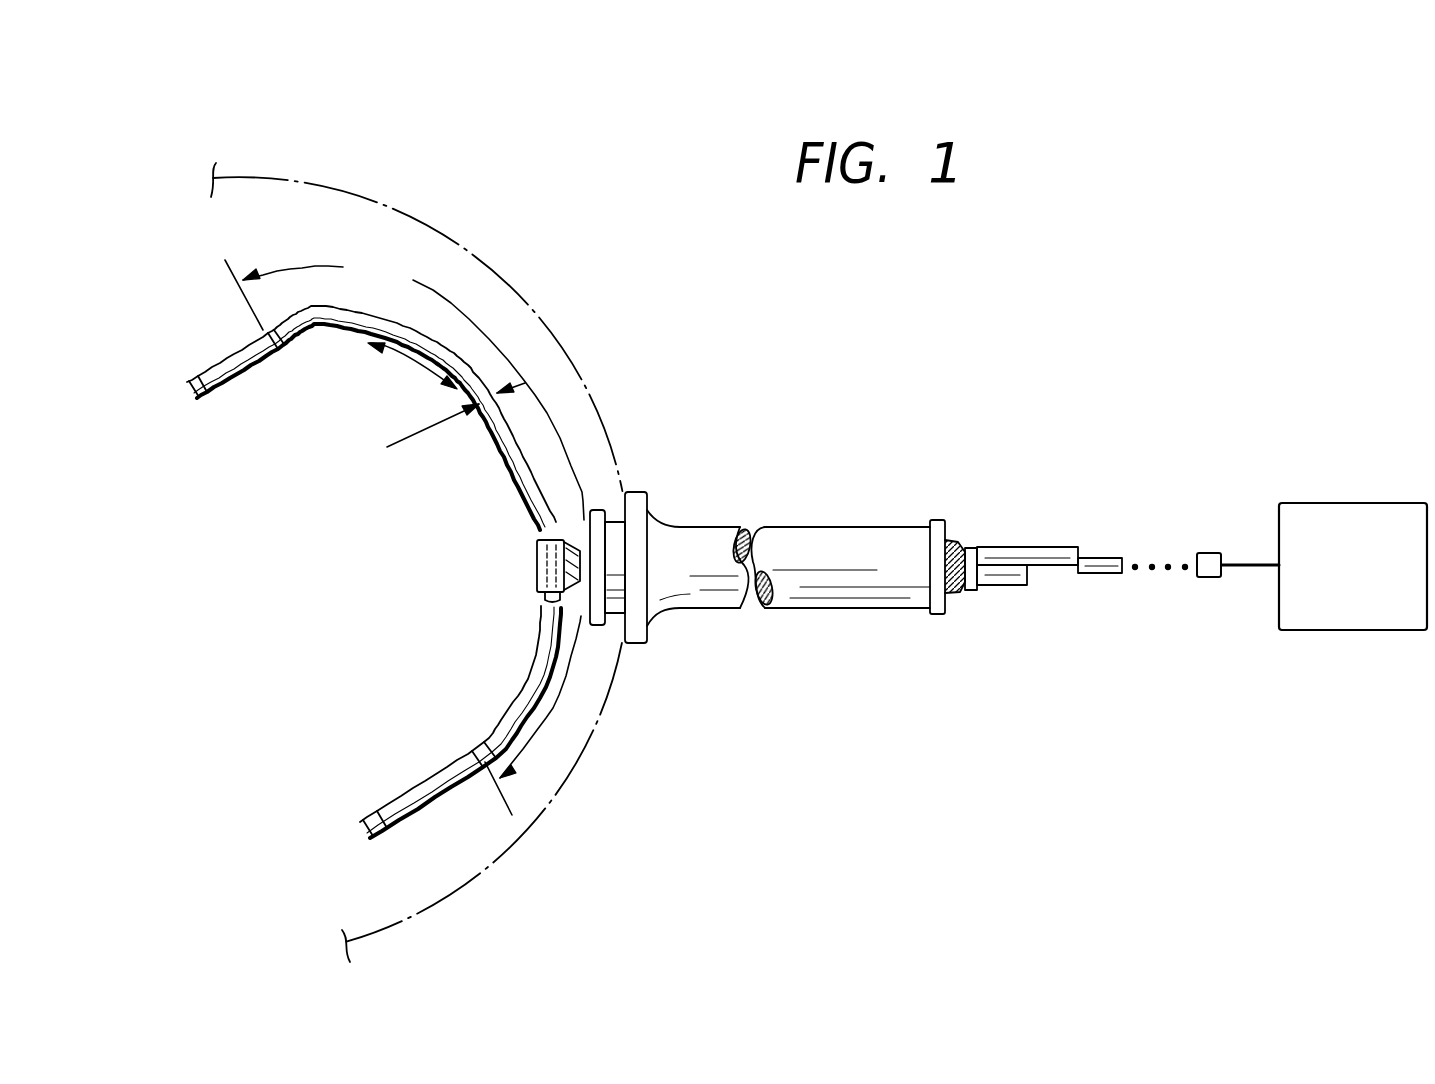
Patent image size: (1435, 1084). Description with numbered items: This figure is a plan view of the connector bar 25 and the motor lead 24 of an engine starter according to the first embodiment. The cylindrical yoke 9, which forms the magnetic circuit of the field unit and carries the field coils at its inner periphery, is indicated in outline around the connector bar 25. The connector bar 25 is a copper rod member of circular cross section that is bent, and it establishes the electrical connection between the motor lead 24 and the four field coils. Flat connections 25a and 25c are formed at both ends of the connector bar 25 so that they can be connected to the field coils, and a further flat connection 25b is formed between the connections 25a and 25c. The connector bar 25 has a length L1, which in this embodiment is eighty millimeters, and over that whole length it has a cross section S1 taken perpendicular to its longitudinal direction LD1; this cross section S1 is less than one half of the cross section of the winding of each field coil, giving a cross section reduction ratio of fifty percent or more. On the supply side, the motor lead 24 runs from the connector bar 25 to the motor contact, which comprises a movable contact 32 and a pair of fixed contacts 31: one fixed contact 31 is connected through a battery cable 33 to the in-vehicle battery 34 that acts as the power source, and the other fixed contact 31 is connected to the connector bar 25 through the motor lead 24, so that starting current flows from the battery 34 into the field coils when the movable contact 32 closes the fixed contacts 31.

The yoke 9 is at (403, 210).
The length of the connector bar L1 is at (404, 536).
The longitudinal direction of the connector bar LD1 is at (407, 353).
The cross section of the connector bar S1 is at (435, 422).
The motor lead 24 is at (805, 552).
The connector bar 25 is at (535, 683).
The flat connection 25a is at (212, 374).
The flat connection 25b is at (572, 605).
The flat connection 25c is at (392, 801).
The fixed contact 31 is at (1207, 617).
The movable contact 32 is at (1202, 580).
The battery cable 33 is at (1238, 562).
The battery 34 is at (1397, 503).